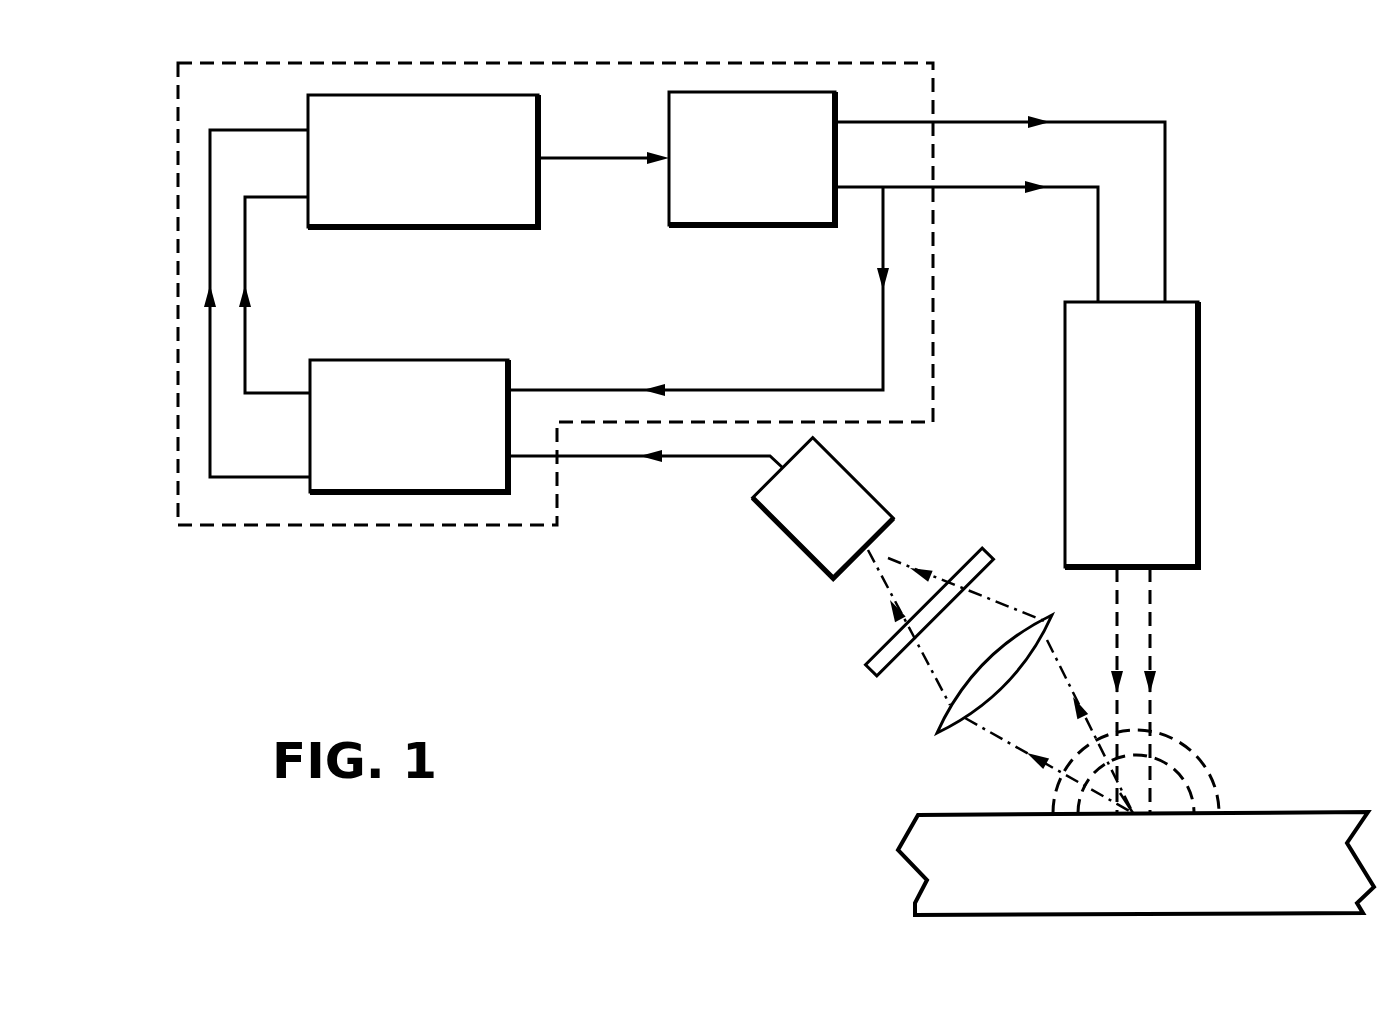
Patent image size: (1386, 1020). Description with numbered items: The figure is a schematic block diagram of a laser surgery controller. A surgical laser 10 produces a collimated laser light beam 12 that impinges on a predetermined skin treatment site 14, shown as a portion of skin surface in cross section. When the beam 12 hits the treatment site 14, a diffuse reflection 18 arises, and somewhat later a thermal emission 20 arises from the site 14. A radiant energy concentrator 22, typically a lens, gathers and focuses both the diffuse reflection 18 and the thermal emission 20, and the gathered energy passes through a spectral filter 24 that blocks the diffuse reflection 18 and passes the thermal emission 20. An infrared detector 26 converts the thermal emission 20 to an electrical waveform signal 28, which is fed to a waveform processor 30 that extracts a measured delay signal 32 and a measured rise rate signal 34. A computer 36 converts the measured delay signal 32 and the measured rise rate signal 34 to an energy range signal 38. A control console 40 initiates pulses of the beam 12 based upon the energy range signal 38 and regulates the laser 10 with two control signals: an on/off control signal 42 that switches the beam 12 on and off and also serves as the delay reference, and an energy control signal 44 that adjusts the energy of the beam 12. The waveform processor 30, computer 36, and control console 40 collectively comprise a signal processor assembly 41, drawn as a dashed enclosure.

The surgical laser 10 is at (1149, 433).
The collimated laser light beam 12 is at (1150, 625).
The skin treatment site 14 is at (1154, 873).
The diffuse reflection 18 is at (1175, 743).
The thermal emission 20 is at (1190, 787).
The radiant energy concentrator 22 is at (952, 727).
The spectral filter 24 is at (880, 650).
The infrared detector 26 is at (845, 490).
The electrical waveform signal 28 is at (592, 456).
The waveform processor 30 is at (425, 442).
The measured delay signal 32 is at (245, 338).
The measured rise rate signal 34 is at (210, 247).
The computer 36 is at (440, 178).
The energy range signal 38 is at (602, 160).
The control console 40 is at (769, 175).
The signal processor assembly 41 is at (352, 527).
The on/off control signal 42 is at (960, 187).
The energy control signal 44 is at (1165, 232).